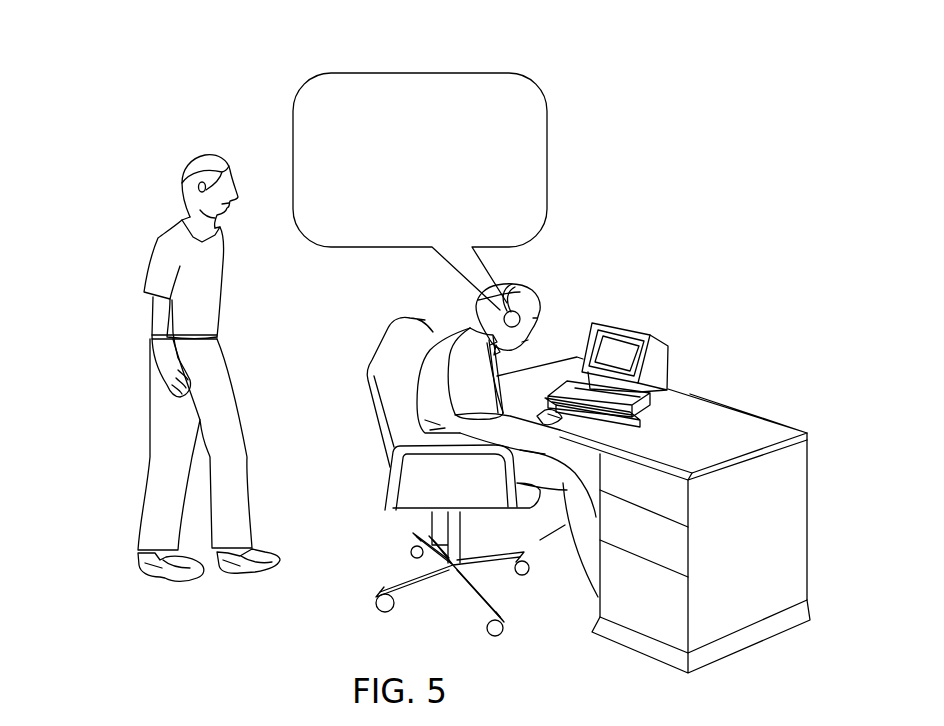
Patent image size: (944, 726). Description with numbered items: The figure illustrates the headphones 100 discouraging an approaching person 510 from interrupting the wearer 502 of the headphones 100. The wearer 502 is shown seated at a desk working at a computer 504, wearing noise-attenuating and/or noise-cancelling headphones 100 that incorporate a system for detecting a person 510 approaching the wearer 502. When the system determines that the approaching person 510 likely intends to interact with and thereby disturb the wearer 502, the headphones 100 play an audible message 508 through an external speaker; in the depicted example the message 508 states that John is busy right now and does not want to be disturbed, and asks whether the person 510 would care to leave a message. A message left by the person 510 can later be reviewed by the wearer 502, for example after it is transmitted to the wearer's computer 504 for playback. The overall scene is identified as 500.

The headphones 100 is at (505, 288).
The presence-aware environment 500 is at (660, 120).
The wearer 502 is at (543, 315).
The computer 504 is at (692, 387).
The message 508 is at (453, 73).
The person 510 is at (182, 160).